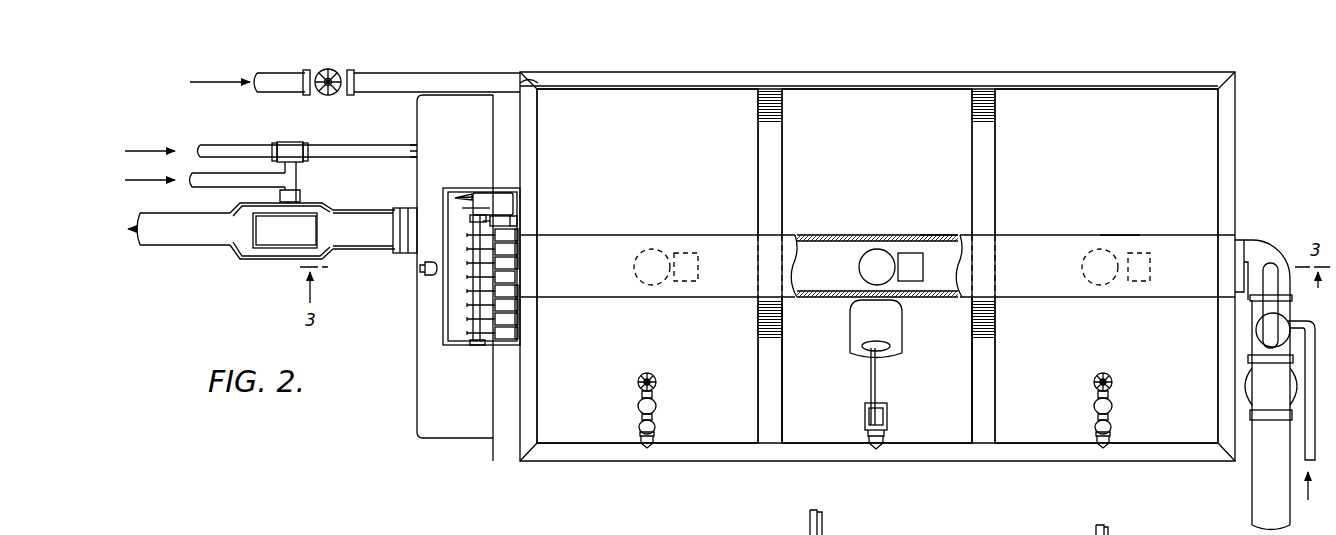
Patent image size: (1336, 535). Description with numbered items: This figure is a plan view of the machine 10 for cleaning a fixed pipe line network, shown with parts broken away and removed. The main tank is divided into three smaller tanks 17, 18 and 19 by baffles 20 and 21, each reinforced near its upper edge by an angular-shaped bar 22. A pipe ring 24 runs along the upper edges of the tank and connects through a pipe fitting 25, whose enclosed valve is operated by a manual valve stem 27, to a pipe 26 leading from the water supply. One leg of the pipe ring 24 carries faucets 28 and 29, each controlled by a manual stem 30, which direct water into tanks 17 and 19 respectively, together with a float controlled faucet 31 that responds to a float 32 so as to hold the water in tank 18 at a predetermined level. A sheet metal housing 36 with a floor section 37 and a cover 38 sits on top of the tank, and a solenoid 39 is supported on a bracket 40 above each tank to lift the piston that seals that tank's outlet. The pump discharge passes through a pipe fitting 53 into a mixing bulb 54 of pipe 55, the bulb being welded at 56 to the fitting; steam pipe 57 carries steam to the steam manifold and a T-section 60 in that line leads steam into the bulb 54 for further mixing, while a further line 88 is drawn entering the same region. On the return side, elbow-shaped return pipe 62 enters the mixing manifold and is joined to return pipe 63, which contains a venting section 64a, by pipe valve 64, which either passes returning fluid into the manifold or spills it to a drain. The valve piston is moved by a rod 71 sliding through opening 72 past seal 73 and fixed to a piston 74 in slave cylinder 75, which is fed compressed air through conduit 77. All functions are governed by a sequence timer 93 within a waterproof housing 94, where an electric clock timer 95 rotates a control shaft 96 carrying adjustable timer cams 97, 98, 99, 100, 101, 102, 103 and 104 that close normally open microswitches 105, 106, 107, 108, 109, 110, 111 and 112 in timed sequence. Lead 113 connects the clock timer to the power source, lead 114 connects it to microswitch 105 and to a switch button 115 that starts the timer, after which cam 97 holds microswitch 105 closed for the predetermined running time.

The machine 10 is at (461, 446).
The tank 17 is at (647, 266).
The tank 18 is at (877, 266).
The tank 19 is at (1106, 266).
The baffle 20 is at (785, 355).
The baffle 21 is at (972, 367).
The angular-shaped bar 22 is at (772, 167).
The pipe ring 24 is at (723, 70).
The pipe fitting 25 is at (354, 74).
The pipe 26 is at (272, 73).
The valve stem 27 is at (330, 69).
The faucet 28 is at (657, 406).
The faucet 29 is at (1113, 406).
The valve stem 30 is at (657, 382).
The float controlled faucet 31 is at (887, 415).
The float 32 is at (890, 325).
The sheet metal housing 36 is at (1121, 234).
The floor section 37 is at (925, 235).
The cover 38 is at (877, 266).
The solenoid 39 is at (652, 249).
The bracket 40 is at (688, 283).
The pipe fitting 53 is at (397, 225).
The mixing bulb 54 is at (262, 261).
The pipe 55 is at (173, 240).
The weld 56 is at (330, 253).
The steam pipe 57 is at (232, 145).
The T-section 60 is at (290, 142).
The return pipe 62 is at (1254, 246).
The return pipe 63 is at (1268, 495).
The pipe valve 64 is at (1300, 319).
The venting section 64a is at (1273, 268).
The rod 71 is at (810, 521).
The opening 72 is at (838, 523).
The seal 73 is at (1130, 529).
The piston 74 is at (1082, 529).
The slave cylinder 75 is at (1258, 333).
The conduit 77 is at (1307, 448).
The inlet pipe 88 is at (200, 187).
The sequence timer 93 is at (481, 185).
The housing 94 is at (445, 205).
The electric clock timer 95 is at (497, 193).
The control shaft 96 is at (500, 221).
The timer cam 97 is at (505, 235).
The timer cam 98 is at (505, 249).
The timer cam 99 is at (505, 263).
The timer cam 100 is at (505, 277).
The timer cam 101 is at (505, 291).
The timer cam 102 is at (505, 305).
The timer cam 103 is at (505, 319).
The timer cam 104 is at (505, 333).
The microswitch 105 is at (514, 224).
The microswitch 106 is at (516, 238).
The microswitch 107 is at (516, 251).
The microswitch 108 is at (516, 265).
The microswitch 109 is at (516, 292).
The microswitch 110 is at (516, 306).
The microswitch 111 is at (516, 320).
The microswitch 112 is at (516, 334).
The lead 113 is at (460, 196).
The lead 114 is at (462, 210).
The switch button 115 is at (425, 270).